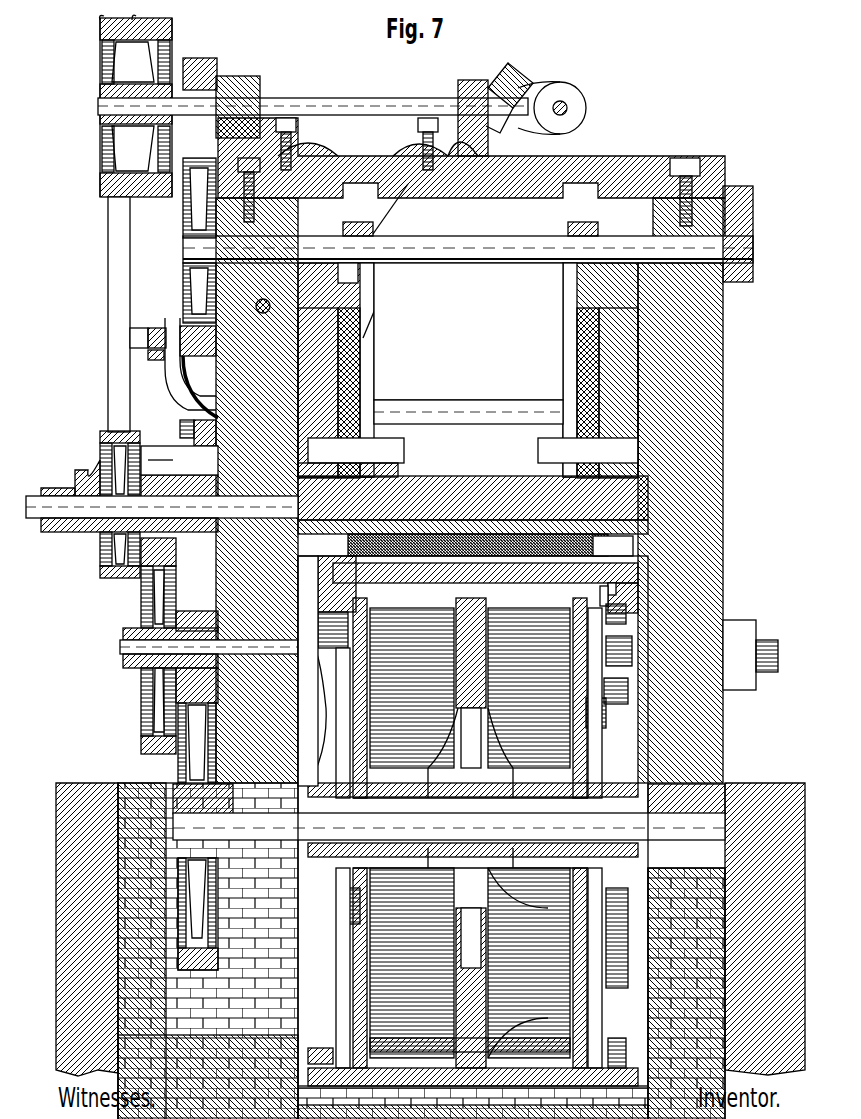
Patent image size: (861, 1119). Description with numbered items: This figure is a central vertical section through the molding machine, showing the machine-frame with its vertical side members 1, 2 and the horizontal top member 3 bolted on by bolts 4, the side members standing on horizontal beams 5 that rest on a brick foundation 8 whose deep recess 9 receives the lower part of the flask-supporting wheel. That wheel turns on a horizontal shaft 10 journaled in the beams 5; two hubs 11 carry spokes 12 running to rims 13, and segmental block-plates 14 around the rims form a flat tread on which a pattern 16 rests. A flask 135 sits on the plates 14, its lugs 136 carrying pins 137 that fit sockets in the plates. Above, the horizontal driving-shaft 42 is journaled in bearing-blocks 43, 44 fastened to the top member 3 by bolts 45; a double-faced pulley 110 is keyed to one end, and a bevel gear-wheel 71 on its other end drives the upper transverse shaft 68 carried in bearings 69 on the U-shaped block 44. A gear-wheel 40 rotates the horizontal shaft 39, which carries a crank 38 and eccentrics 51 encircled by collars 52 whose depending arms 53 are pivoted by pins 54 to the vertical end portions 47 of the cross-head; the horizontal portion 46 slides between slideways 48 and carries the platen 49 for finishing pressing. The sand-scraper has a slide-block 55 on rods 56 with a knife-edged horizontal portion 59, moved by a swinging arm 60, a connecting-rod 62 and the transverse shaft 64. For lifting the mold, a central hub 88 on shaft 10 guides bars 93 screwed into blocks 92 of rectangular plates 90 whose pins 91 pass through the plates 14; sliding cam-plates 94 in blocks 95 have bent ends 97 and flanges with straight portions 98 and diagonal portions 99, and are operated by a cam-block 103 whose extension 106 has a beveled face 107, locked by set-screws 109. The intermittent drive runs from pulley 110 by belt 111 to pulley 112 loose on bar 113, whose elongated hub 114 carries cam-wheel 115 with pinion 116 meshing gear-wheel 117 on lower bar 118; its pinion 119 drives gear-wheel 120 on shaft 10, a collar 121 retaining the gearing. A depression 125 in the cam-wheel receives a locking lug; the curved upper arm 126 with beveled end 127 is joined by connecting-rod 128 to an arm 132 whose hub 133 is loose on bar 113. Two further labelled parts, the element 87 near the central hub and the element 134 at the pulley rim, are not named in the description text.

The vertical side member 1 is at (290, 214).
The vertical side member 2 is at (700, 445).
The horizontal top member 3 is at (622, 148).
The bolt 4 is at (246, 152).
The horizontal beam 5 is at (170, 790).
The foundation 8 is at (105, 830).
The depression or recess 9 is at (170, 1000).
The horizontal shaft 10 is at (690, 810).
The hub 11 is at (320, 790).
The spoke 12 is at (478, 838).
The rim or ring 13 is at (310, 590).
The segmental block-plate 14 is at (600, 585).
The pattern 16 is at (600, 560).
The crank 38 is at (746, 230).
The horizontal shaft 39 is at (478, 256).
The gear-wheel 40 is at (190, 258).
The horizontal driving-shaft 42 is at (205, 60).
The bearing-block 43 is at (235, 75).
The bearing-block 44 is at (465, 72).
The bolt 45 is at (280, 112).
The horizontal portion of cross-head 46 is at (432, 478).
The vertical end portion of cross-head 47 is at (318, 350).
The slideway 48 is at (330, 290).
The platen 49 is at (490, 530).
The eccentric 51 is at (555, 290).
The collar 52 is at (350, 214).
The depending arm 53 is at (352, 316).
The pin 54 is at (380, 438).
The slide-block 55 is at (385, 462).
The horizontal rod 56 is at (450, 395).
The horizontal portion of plate 59 is at (300, 556).
The swinging arm 60 is at (390, 209).
The connecting-rod 62 is at (366, 275).
The transverse horizontal shaft 64 is at (200, 387).
The upper transverse shaft 68 is at (560, 104).
The bearing 69 is at (558, 82).
The bevel gear-wheel 71 is at (512, 66).
The plate 87 is at (473, 852).
The central hub 88 is at (440, 792).
The rectangular plate 90 is at (398, 604).
The pin 91 is at (517, 840).
The block 92 is at (448, 660).
The bar 93 is at (478, 680).
The sliding cam-plate 94 is at (538, 604).
The block 95 is at (359, 660).
The bent end 97 is at (590, 705).
The straight portion of flange 98 is at (440, 1028).
The diagonal portion of flange 99 is at (518, 963).
The cam-block 103 is at (732, 620).
The extension 106 is at (325, 608).
The curved or beveled face 107 is at (318, 650).
The set-screw 109 is at (768, 638).
The double-faced pulley 110 is at (152, 20).
The belt 111 is at (100, 248).
The pulley 112 is at (98, 428).
The horizontal shaft or bar 113 is at (40, 512).
The elongated hub 114 is at (100, 562).
The cam-wheel 115 is at (175, 450).
The pinion 116 is at (160, 450).
The gear-wheel 117 is at (150, 590).
The lower horizontal shaft or bar 118 is at (115, 652).
The pinion 119 is at (185, 606).
The gear-wheel 120 is at (180, 688).
The collar 121 is at (115, 624).
The depression 125 is at (174, 416).
The upper arm 126 is at (165, 366).
The beveled upper end 127 is at (122, 326).
The connecting-rod 128 is at (140, 346).
The upwardly-extending arm 132 is at (72, 470).
The hub 133 is at (70, 524).
The rim 134 is at (96, 18).
The flask 135 is at (612, 545).
The lug 136 is at (615, 585).
The pin 137 is at (608, 572).